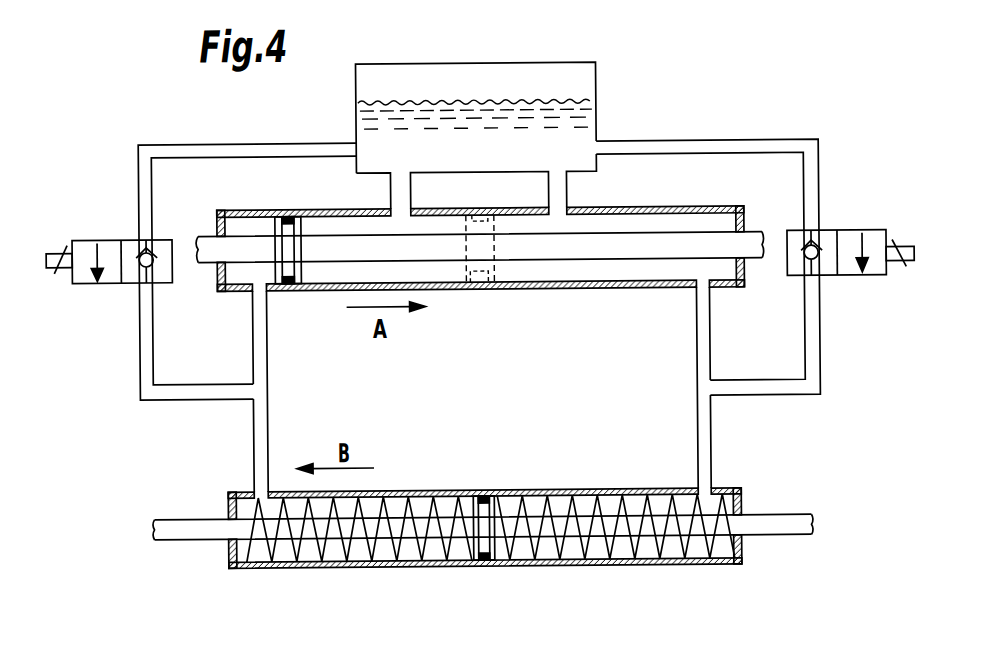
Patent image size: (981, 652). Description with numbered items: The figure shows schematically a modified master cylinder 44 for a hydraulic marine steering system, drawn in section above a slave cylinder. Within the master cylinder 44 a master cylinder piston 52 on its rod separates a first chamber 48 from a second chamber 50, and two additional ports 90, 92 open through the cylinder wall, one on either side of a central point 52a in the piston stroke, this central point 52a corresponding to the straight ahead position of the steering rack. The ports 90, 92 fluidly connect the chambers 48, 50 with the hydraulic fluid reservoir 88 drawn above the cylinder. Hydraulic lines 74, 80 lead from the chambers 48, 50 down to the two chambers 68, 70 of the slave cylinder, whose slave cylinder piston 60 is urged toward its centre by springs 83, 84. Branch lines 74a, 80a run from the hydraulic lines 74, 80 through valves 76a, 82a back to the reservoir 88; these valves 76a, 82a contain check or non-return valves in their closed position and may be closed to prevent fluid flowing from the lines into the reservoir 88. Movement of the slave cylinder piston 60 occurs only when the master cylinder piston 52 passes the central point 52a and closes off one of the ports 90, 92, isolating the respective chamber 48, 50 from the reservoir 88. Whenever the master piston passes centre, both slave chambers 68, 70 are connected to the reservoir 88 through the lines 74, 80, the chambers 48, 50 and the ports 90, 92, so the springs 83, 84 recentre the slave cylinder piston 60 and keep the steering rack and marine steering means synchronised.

The master cylinder 44 is at (692, 208).
The first chamber 48 is at (251, 225).
The second chamber 50 is at (624, 269).
The master cylinder piston 52 is at (292, 289).
The central point 52a is at (481, 270).
The slave cylinder piston 60 is at (483, 493).
The slave cylinder chamber 68 is at (420, 504).
The slave cylinder chamber 70 is at (588, 499).
The hydraulic line 74 is at (254, 455).
The left return line 74a is at (215, 388).
The valve 76a is at (83, 234).
The hydraulic line 80 is at (705, 455).
The right return line 80a is at (752, 385).
The valve 82a is at (874, 233).
The spring 83 is at (362, 544).
The spring 84 is at (637, 541).
The hydraulic fluid reservoir 88 is at (600, 111).
The port 90 is at (391, 196).
The port 92 is at (562, 198).